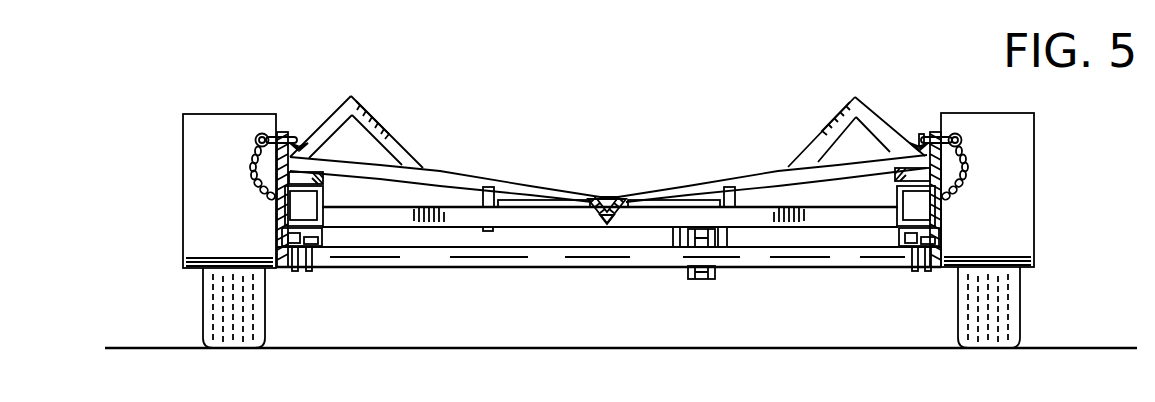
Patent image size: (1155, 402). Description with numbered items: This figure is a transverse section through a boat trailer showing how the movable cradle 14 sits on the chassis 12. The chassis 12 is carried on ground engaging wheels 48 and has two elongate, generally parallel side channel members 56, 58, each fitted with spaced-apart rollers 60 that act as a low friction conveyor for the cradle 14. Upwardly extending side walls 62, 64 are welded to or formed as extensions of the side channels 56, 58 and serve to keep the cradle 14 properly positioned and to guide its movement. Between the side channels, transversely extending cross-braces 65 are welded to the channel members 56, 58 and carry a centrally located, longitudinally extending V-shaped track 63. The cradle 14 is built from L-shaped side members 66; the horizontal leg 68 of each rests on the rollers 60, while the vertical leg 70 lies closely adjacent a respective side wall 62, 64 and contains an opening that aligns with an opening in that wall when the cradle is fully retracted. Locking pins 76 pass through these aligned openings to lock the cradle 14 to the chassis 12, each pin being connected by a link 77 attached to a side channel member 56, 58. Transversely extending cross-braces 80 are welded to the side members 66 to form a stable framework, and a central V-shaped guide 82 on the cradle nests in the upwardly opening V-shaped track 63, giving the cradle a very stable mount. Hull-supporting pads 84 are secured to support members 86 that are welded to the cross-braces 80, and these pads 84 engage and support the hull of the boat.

The chassis 12 is at (895, 226).
The cradle 14 is at (521, 177).
The ground engaging wheels 48 is at (265, 318).
The side channel member 56 is at (938, 212).
The side channel member 58 is at (322, 212).
The rollers 60 is at (323, 182).
The side wall 62 is at (943, 160).
The V-shaped track 63 is at (603, 225).
The side wall 64 is at (280, 168).
The cross-braces 65 is at (645, 217).
The side members 66 is at (302, 146).
The horizontal leg 68 is at (285, 208).
The vertical leg 70 is at (296, 145).
The locking pins 76 is at (260, 133).
The link 77 is at (253, 195).
The cross-braces 80 is at (693, 183).
The V-shaped guide 82 is at (602, 199).
The hull-supporting pads 84 is at (371, 118).
The support members 86 is at (345, 112).